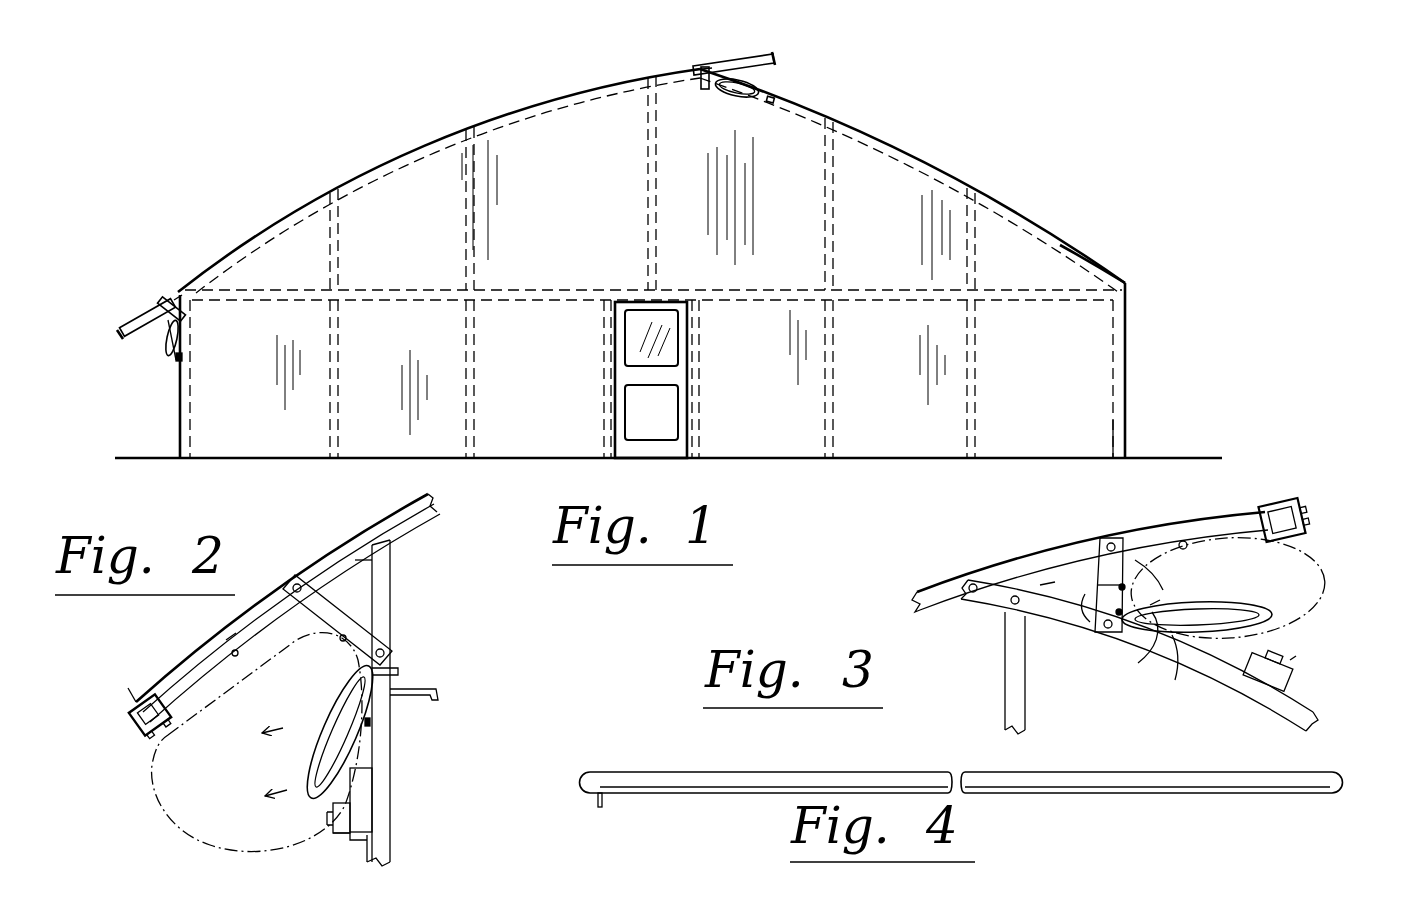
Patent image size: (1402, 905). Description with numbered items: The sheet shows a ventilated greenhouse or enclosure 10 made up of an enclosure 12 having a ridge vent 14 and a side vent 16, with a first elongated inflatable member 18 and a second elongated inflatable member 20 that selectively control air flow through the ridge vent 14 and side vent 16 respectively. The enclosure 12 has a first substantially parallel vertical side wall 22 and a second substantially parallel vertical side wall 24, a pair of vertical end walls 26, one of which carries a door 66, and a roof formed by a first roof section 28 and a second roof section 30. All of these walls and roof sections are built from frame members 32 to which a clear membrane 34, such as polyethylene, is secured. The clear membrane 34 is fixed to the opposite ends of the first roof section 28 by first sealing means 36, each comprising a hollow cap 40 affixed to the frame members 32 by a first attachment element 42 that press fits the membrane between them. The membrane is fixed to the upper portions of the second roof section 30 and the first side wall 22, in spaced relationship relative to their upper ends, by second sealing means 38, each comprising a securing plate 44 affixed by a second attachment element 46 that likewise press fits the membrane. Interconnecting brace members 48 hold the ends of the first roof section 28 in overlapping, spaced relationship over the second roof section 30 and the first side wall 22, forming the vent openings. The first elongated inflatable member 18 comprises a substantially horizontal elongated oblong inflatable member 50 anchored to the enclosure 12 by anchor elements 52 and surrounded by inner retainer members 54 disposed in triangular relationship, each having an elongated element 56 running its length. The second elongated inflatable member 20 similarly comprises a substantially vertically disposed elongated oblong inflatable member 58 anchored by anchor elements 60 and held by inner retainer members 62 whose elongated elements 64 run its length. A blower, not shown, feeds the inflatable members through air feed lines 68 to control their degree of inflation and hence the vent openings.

In FIG. 1, the ventilated greenhouse or enclosure 10 is at (213, 152).
In FIG. 1, the enclosure 12 is at (1110, 265).
In FIG. 1, the ridge vent 14 is at (693, 70).
In FIG. 3, the ridge vent 14 is at (1055, 582).
In FIG. 1, the side vent 16 is at (172, 297).
In FIG. 2, the side vent 16 is at (360, 568).
In FIG. 1, the first elongated inflatable member 18 is at (790, 78).
In FIG. 3, the first elongated inflatable member 18 is at (1203, 585).
In FIG. 1, the second elongated inflatable member 20 is at (160, 340).
In FIG. 2, the second elongated inflatable member 20 is at (285, 750).
In FIG. 1, the first substantially parallel vertical side wall 22 is at (176, 430).
In FIG. 2, the first substantially parallel vertical side wall 22 is at (403, 613).
In FIG. 1, the second substantially parallel vertical side wall 24 is at (1140, 350).
In FIG. 1, the substantially parallel vertical end wall 26 is at (1090, 425).
In FIG. 1, the first roof section 28 is at (396, 150).
In FIG. 2, the first roof section 28 is at (397, 490).
In FIG. 3, the first roof section 28 is at (1038, 540).
In FIG. 1, the second roof section 30 is at (940, 160).
In FIG. 3, the second roof section 30 is at (1190, 680).
In FIG. 1, the frame member 32 is at (258, 243).
In FIG. 2, the frame member 32 is at (392, 560).
In FIG. 3, the frame member 32 is at (925, 605).
In FIG. 1, the clear membrane 34 is at (993, 222).
In FIG. 2, the clear membrane 34 is at (314, 556).
In FIG. 3, the clear membrane 34 is at (1062, 545).
In FIG. 1, the first sealing means 36 is at (762, 55).
In FIG. 2, the first sealing means 36 is at (128, 688).
In FIG. 3, the first sealing means 36 is at (1284, 519).
In FIG. 1, the second sealing means 38 is at (793, 100).
In FIG. 2, the second sealing means 38 is at (340, 845).
In FIG. 3, the second sealing means 38 is at (1300, 680).
In FIG. 2, the hollow cap 40 is at (150, 700).
In FIG. 2, the first attachment element 42 is at (132, 712).
In FIG. 2, the securing plate 44 is at (365, 793).
In FIG. 3, the securing plate 44 is at (1248, 690).
In FIG. 2, the second attachment element 46 is at (327, 820).
In FIG. 3, the second attachment element 46 is at (1295, 665).
In FIG. 1, the interconnecting brace member 48 is at (698, 90).
In FIG. 2, the interconnecting brace member 48 is at (355, 612).
In FIG. 3, the interconnecting brace member 48 is at (1088, 545).
In FIG. 1, the substantially horizontal elongated oblong inflatable member 50 is at (735, 95).
In FIG. 3, the substantially horizontal elongated oblong inflatable member 50 is at (1250, 612).
In FIG. 4, the substantially horizontal elongated oblong inflatable member 50 is at (930, 770).
In FIG. 3, the anchor element 52 is at (1095, 612).
In FIG. 3, the inner retainer member 54 is at (1183, 538).
In FIG. 3, the elongated element 56 is at (1150, 605).
In FIG. 1, the substantially vertically disposed elongated oblong inflatable member 58 is at (180, 340).
In FIG. 2, the substantially vertically disposed elongated oblong inflatable member 58 is at (335, 705).
In FIG. 4, the substantially vertically disposed elongated oblong inflatable member 58 is at (1152, 782).
In FIG. 2, the anchor element 60 is at (398, 670).
In FIG. 2, the inner retainer member 62 is at (228, 640).
In FIG. 2, the elongated element 64 is at (230, 656).
In FIG. 1, the door 66 is at (680, 412).
In FIG. 2, the air feed line 68 is at (436, 690).
In FIG. 3, the air feed line 68 is at (1138, 652).
In FIG. 4, the air feed line 68 is at (590, 848).